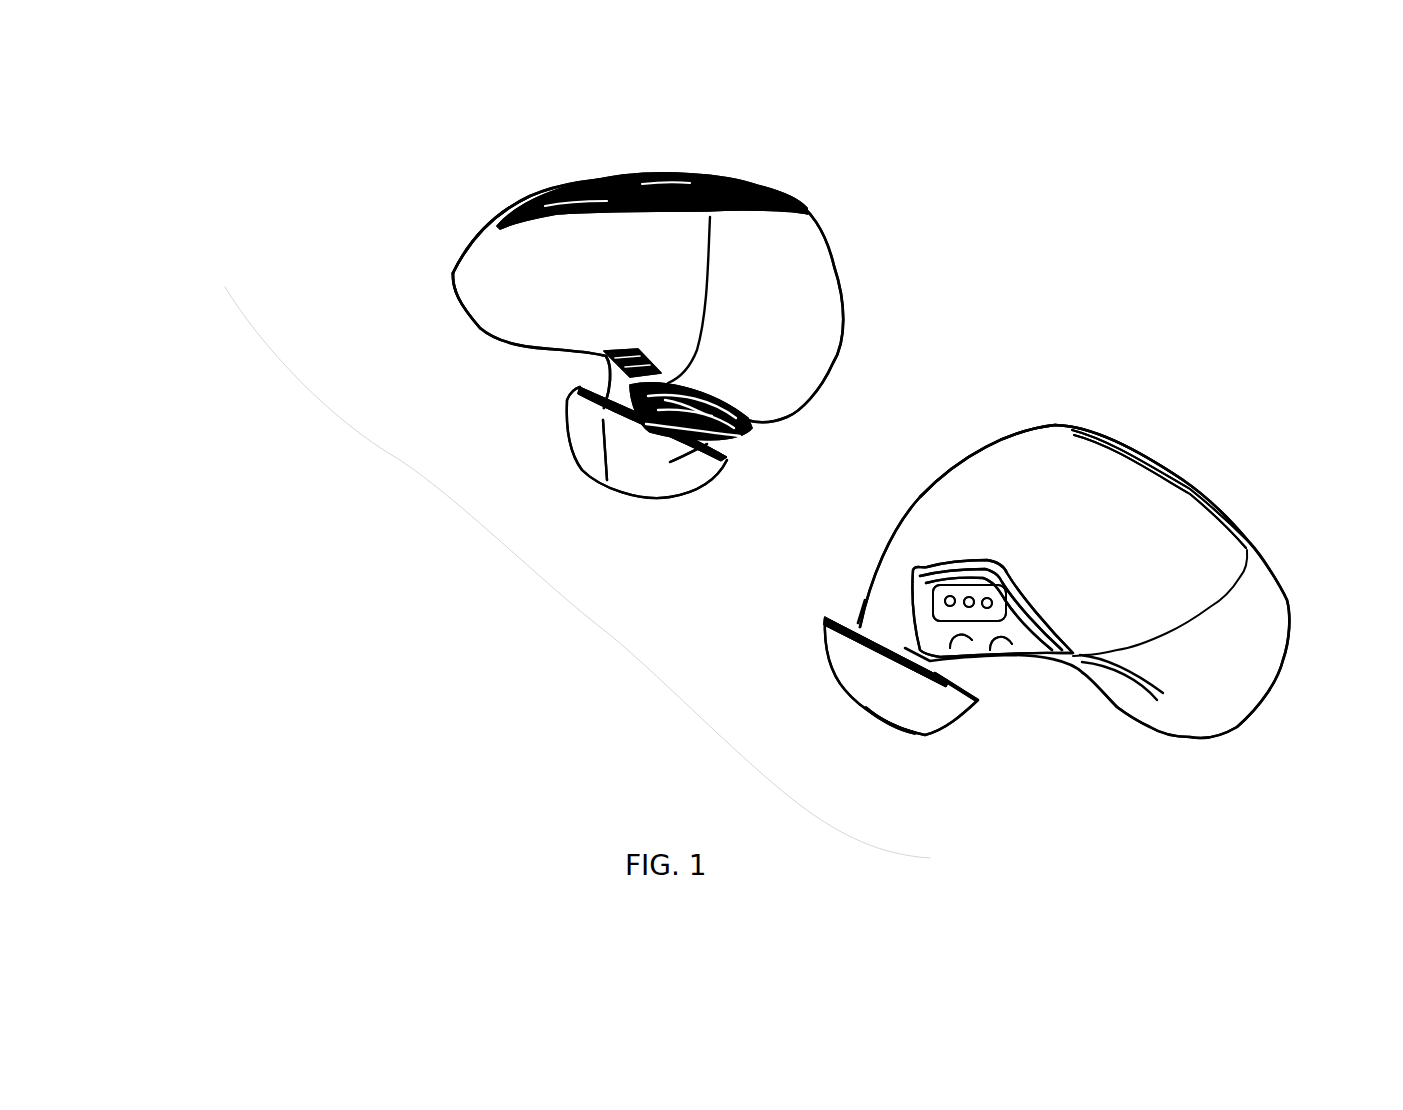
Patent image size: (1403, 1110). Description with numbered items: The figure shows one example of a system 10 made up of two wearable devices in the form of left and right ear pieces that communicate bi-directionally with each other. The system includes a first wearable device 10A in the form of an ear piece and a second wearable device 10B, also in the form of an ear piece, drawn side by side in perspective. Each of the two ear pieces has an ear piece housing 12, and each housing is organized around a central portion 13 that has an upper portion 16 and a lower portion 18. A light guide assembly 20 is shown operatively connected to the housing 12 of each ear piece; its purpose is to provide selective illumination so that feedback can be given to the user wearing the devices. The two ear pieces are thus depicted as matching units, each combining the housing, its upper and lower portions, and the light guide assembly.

The system 10 is at (566, 606).
The first wearable device 10A is at (799, 138).
The second wearable device 10B is at (1230, 494).
The ear piece housing 12 is at (534, 327).
The central portion 13 is at (487, 270).
The upper portion 16 is at (501, 211).
The lower portion 18 is at (563, 356).
The light guide assembly 20 is at (685, 177).